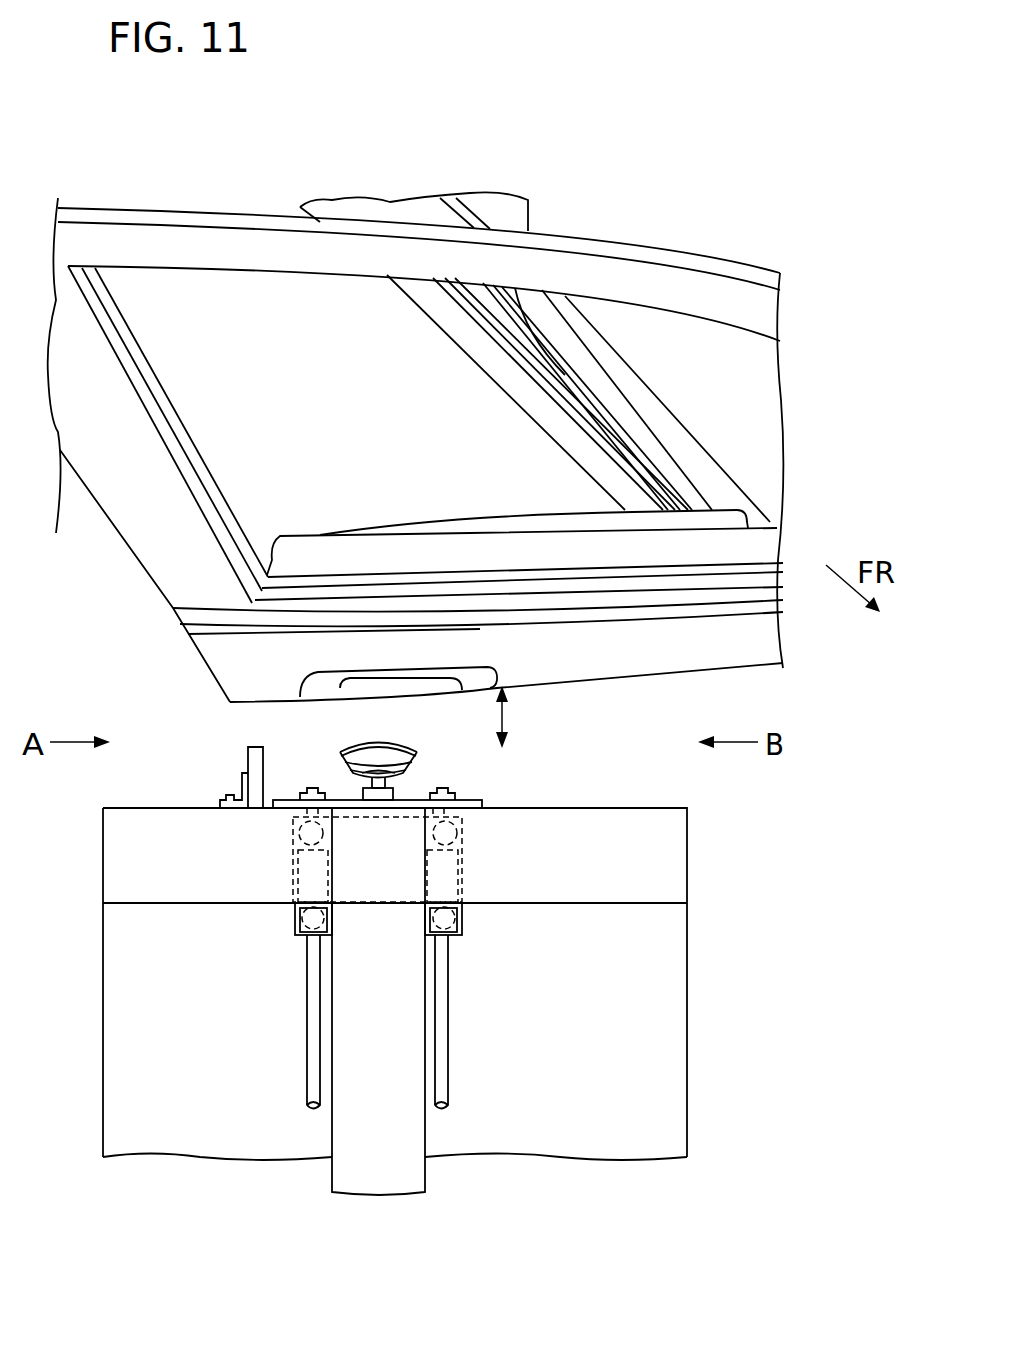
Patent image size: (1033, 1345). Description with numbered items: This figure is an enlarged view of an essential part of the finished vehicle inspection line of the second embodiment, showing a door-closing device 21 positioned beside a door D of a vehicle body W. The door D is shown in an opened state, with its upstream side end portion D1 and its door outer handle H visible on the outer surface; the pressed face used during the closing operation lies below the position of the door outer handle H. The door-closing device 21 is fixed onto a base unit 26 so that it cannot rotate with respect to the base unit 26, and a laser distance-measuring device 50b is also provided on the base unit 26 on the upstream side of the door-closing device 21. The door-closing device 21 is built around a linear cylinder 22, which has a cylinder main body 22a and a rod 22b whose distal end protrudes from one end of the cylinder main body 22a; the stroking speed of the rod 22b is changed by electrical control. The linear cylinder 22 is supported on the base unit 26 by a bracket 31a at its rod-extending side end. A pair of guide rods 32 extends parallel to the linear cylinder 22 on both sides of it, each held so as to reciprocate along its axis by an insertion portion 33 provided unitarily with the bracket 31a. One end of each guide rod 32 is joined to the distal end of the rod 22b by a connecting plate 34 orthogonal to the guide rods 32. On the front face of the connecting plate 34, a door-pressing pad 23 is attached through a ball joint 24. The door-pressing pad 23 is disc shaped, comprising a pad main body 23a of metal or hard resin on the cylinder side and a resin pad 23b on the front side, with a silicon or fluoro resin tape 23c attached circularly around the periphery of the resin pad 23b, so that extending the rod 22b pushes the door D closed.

The door-closing device 21 is at (232, 1030).
The linear cylinder 22 is at (322, 1033).
The cylinder main body 22a is at (352, 1067).
The rod 22b is at (384, 813).
The door-pressing pad 23 is at (426, 752).
The pad main body 23a is at (348, 764).
The resin pad 23b is at (347, 750).
The silicon or fluoro resin tape 23c is at (362, 746).
The ball joint 24 is at (350, 793).
The base unit 26 is at (698, 1003).
The bracket 31a is at (305, 880).
The guide rod 32 is at (312, 995).
The insertion portion 33 is at (306, 920).
The connecting plate 34 is at (482, 806).
The laser distance-measuring device 50b is at (238, 768).
The door D is at (248, 242).
The end portion of the door D1 is at (190, 645).
The vehicle body W is at (410, 208).
The door outer handle H is at (363, 688).